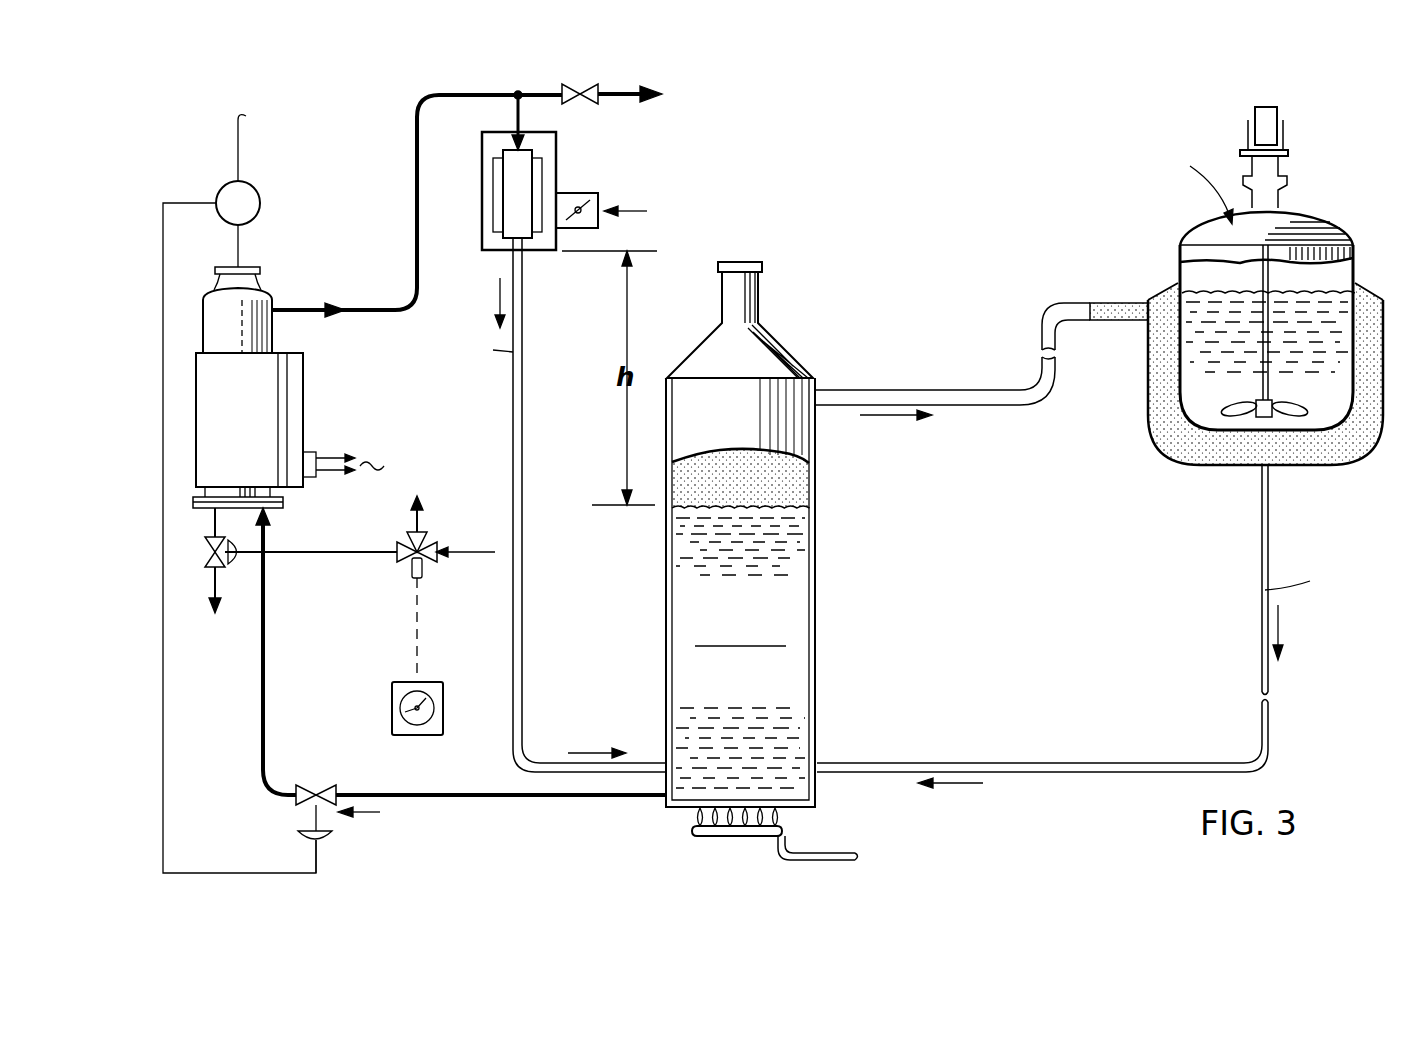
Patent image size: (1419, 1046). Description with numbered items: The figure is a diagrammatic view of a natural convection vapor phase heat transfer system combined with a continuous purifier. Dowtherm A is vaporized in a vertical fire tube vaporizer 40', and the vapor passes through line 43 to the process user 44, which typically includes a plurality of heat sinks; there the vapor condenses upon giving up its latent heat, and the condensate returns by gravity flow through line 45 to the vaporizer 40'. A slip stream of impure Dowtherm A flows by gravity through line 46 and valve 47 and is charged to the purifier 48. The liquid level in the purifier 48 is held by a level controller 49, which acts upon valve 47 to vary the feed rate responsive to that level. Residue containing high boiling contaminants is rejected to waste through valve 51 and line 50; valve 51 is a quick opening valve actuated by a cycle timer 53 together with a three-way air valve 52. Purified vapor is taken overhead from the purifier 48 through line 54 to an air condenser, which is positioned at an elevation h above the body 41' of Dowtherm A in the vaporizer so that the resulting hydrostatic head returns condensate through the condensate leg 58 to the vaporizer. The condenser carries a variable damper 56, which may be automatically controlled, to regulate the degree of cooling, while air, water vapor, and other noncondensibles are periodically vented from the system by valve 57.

The vertical fire tube vaporizer 40' is at (781, 534).
The body of Dowtherm A 41' is at (784, 647).
The line 43 is at (1000, 407).
The process user 44 is at (1305, 228).
The line 45 is at (1260, 519).
The line 46 is at (598, 797).
The valve 47 is at (325, 788).
The purifier 48 is at (260, 297).
The level controller 49 is at (262, 198).
The line 50 is at (217, 592).
The valve 51 is at (226, 565).
The three-way air valve 52 is at (428, 565).
The cycle timer 53 is at (390, 690).
The line 54 is at (415, 195).
The variable damper 56 is at (588, 198).
The valve 57 is at (588, 104).
The condensate leg 58 is at (512, 380).